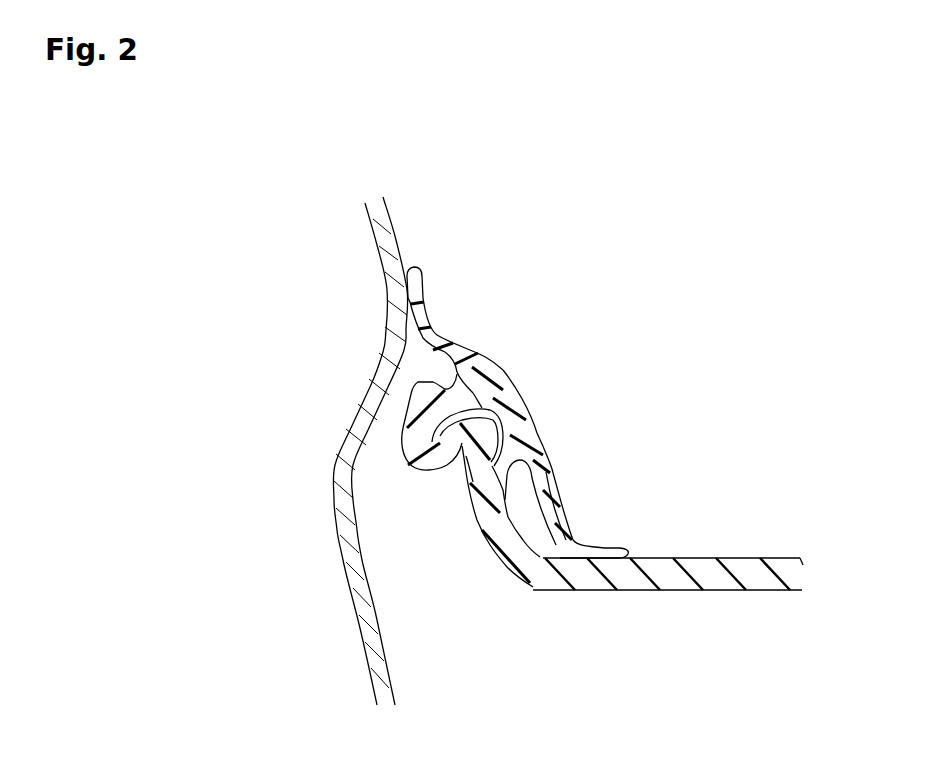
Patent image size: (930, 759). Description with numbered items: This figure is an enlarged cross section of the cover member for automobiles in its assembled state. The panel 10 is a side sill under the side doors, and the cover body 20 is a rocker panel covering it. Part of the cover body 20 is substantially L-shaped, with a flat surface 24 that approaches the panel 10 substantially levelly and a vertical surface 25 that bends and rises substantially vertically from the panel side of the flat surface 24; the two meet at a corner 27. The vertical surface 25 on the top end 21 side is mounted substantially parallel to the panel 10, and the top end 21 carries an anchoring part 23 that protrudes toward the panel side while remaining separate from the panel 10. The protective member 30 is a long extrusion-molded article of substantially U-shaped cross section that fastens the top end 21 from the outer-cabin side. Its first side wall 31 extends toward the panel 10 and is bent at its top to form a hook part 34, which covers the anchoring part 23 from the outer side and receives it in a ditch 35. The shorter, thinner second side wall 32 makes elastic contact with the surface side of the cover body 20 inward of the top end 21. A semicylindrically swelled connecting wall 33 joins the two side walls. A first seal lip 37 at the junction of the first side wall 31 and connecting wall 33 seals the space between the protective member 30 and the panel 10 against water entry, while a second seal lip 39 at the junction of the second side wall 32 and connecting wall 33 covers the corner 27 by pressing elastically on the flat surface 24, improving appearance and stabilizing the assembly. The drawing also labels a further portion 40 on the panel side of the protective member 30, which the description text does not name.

The panel 10 is at (338, 533).
The cover body 20 is at (683, 592).
The top end 21 is at (478, 427).
The anchoring part 23 is at (428, 470).
The flat surface 24 is at (697, 557).
The vertical surface 25 is at (516, 472).
The corner 27 is at (553, 560).
The protective member 30 is at (513, 358).
The first side wall 31 is at (458, 400).
The second side wall 32 is at (552, 491).
The connecting wall 33 is at (514, 398).
The hook part 34 is at (443, 470).
The ditch 35 is at (424, 452).
The first seal lip 37 is at (418, 298).
The second seal lip 39 is at (566, 513).
The seal bump 40 is at (423, 391).